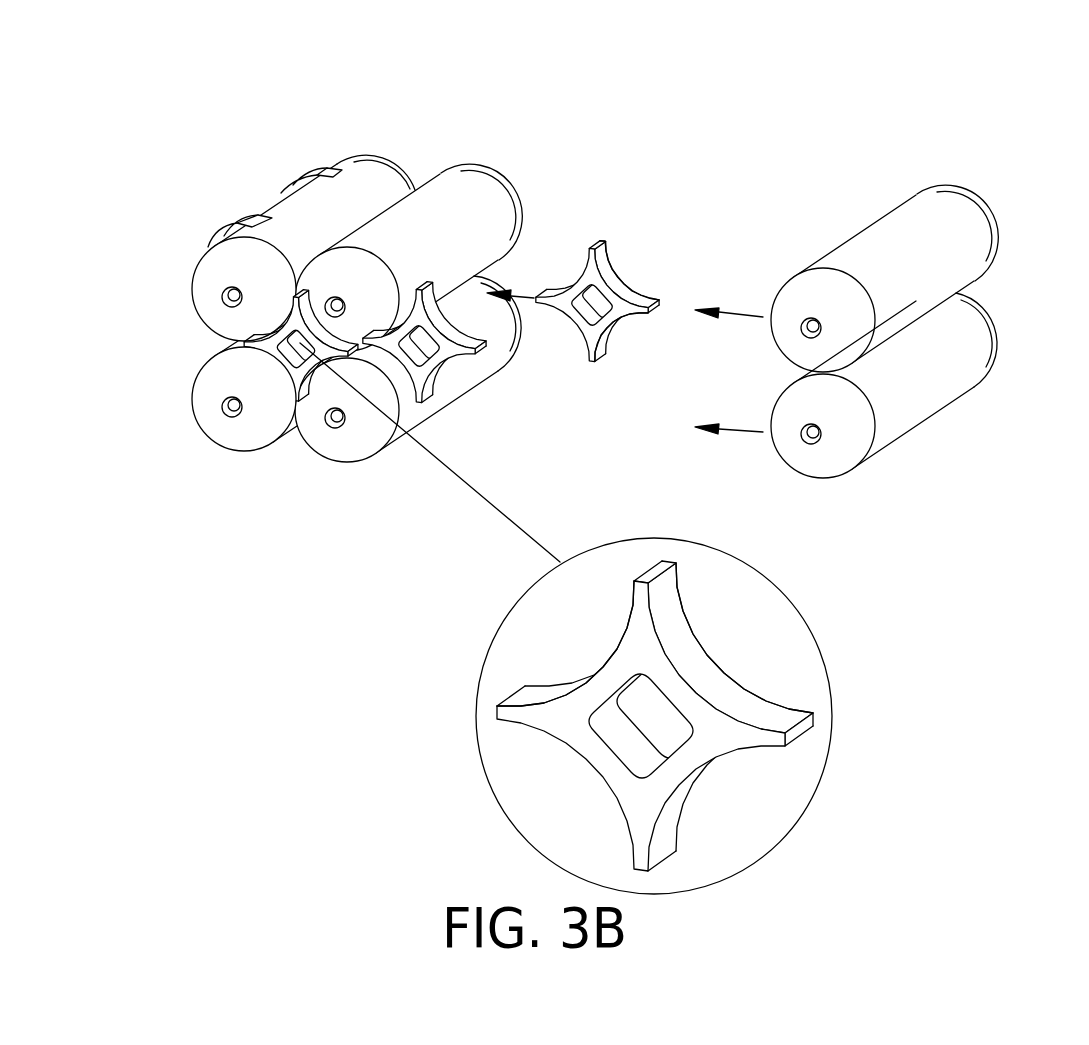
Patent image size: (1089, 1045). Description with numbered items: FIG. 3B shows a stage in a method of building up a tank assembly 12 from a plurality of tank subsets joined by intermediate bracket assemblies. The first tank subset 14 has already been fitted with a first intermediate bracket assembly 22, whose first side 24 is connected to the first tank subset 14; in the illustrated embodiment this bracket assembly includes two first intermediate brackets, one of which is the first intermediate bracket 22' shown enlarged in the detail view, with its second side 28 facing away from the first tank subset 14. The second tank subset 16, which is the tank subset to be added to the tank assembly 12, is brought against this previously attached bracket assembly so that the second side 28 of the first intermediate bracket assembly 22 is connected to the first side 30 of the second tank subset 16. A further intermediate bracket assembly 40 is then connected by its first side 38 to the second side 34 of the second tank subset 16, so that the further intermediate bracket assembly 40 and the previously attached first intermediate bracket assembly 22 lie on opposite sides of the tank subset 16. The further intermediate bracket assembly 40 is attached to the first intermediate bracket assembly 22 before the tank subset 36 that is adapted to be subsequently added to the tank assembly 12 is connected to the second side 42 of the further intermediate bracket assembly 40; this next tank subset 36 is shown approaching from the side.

The tank assembly 12 is at (368, 294).
The first tank subset 14 is at (200, 450).
The second tank subset 16 is at (318, 478).
The first intermediate bracket assembly 22 is at (301, 353).
The first intermediate bracket 22' is at (655, 688).
The first side of the first intermediate bracket assembly 24 is at (575, 637).
The second side of the first intermediate bracket assembly 28 is at (738, 655).
The first side of the second tank subset 30 is at (425, 163).
The second side of the tank subset to be added 34 is at (527, 187).
The tank subset adapted to be subsequently added 36 is at (997, 175).
The first side of the further intermediate bracket assembly 38 is at (567, 257).
The further intermediate bracket assembly 40 is at (617, 327).
The second side of the further intermediate bracket assembly 42 is at (645, 245).